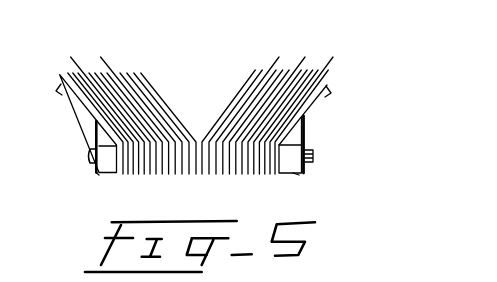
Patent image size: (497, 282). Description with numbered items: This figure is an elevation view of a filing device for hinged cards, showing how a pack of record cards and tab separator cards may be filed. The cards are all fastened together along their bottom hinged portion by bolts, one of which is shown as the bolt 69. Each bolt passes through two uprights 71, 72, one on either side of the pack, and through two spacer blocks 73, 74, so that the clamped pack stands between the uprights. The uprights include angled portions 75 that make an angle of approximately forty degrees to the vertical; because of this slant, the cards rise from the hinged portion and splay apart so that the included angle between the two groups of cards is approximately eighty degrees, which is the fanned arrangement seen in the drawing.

The bolt 69 is at (89, 152).
The upright 71 is at (95, 124).
The upright 72 is at (305, 128).
The spacer block 73 is at (97, 173).
The spacer block 74 is at (295, 174).
The angled portion 75 is at (61, 93).